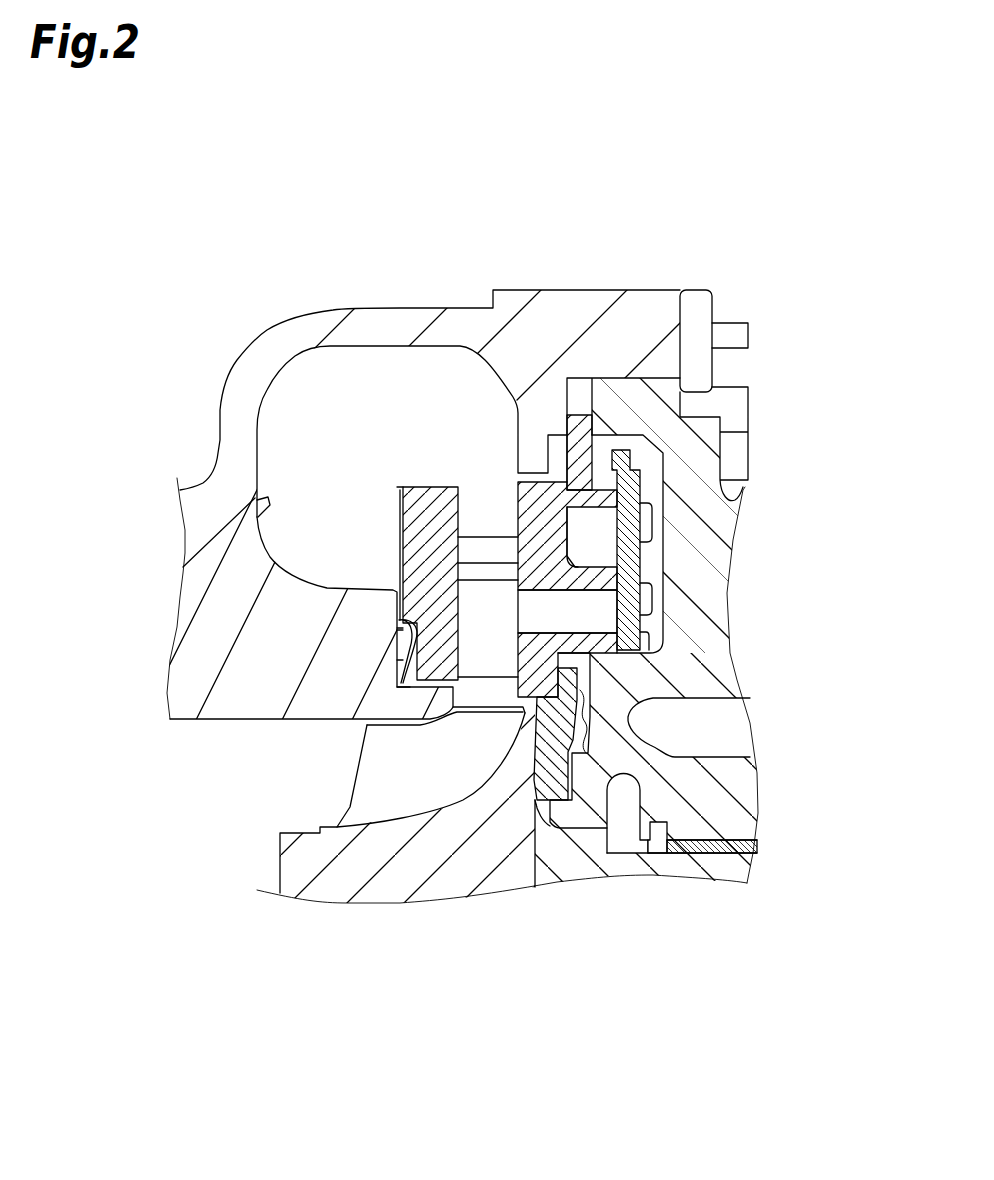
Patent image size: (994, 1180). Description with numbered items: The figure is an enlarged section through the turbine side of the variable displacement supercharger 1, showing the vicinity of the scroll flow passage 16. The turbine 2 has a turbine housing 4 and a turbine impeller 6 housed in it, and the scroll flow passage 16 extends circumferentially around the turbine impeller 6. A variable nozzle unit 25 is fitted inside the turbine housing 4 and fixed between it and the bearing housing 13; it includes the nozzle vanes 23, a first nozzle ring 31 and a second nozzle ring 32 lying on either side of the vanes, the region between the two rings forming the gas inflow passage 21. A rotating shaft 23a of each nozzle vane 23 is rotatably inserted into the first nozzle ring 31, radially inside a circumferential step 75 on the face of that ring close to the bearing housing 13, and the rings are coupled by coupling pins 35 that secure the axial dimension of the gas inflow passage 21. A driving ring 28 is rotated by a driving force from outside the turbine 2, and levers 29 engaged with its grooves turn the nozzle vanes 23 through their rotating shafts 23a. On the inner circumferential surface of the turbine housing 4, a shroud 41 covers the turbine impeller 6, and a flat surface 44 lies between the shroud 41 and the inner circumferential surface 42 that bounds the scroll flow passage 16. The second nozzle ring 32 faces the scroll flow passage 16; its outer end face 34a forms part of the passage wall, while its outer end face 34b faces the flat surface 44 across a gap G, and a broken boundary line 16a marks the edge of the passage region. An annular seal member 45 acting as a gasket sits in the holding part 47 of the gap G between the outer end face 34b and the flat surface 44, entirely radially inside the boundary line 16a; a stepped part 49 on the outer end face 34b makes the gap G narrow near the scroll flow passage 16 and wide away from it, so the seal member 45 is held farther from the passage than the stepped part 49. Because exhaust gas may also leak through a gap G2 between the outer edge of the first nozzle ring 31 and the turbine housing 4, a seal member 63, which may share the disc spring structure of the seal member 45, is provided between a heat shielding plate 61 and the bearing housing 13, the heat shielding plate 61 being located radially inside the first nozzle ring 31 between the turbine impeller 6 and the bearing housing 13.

The variable displacement supercharger 1 is at (755, 219).
The turbine 2 is at (221, 358).
The turbine housing 4 is at (297, 340).
The turbine impeller 6 is at (383, 772).
The bearing housing 13 is at (748, 782).
The scroll flow passage 16 is at (388, 424).
The boundary line 16a is at (295, 553).
The gas inflow passage 21 is at (470, 525).
The nozzle vanes 23 is at (398, 540).
The rotating shaft 23a is at (597, 608).
The variable nozzle unit 25 is at (495, 412).
The driving ring 28 is at (612, 452).
The levers 29 is at (628, 571).
The first nozzle ring 31 is at (565, 410).
The second nozzle ring 32 is at (440, 487).
The outer end face 34a is at (403, 487).
The outer end face 34b is at (397, 598).
The coupling pins 35 is at (505, 532).
The shroud 41 is at (420, 727).
The inner circumferential surface 42 is at (268, 502).
The flat surface 44 is at (395, 630).
The seal member 45 is at (395, 688).
The holding part 47 is at (397, 662).
The stepped part 49 is at (397, 634).
The heat shielding plate 61 is at (523, 712).
The seal member 63 is at (590, 717).
The step 75 is at (592, 558).
The gap G is at (350, 652).
The gap G2 is at (533, 510).